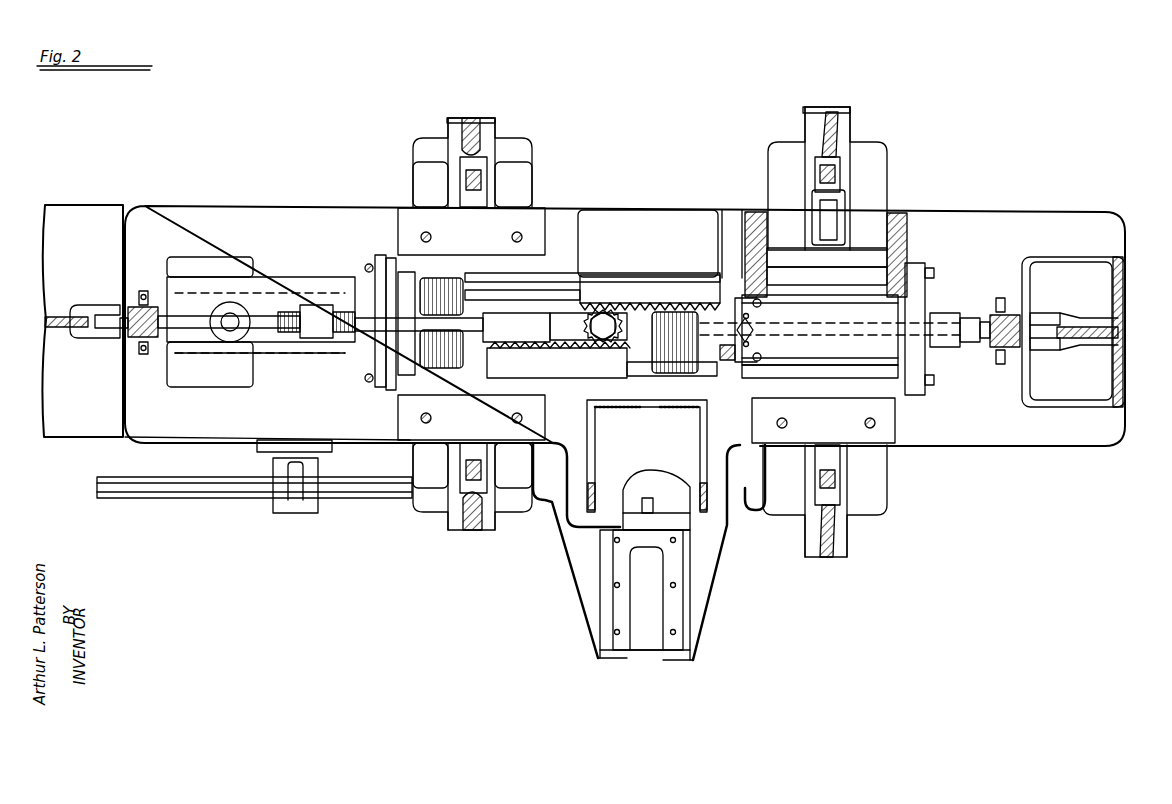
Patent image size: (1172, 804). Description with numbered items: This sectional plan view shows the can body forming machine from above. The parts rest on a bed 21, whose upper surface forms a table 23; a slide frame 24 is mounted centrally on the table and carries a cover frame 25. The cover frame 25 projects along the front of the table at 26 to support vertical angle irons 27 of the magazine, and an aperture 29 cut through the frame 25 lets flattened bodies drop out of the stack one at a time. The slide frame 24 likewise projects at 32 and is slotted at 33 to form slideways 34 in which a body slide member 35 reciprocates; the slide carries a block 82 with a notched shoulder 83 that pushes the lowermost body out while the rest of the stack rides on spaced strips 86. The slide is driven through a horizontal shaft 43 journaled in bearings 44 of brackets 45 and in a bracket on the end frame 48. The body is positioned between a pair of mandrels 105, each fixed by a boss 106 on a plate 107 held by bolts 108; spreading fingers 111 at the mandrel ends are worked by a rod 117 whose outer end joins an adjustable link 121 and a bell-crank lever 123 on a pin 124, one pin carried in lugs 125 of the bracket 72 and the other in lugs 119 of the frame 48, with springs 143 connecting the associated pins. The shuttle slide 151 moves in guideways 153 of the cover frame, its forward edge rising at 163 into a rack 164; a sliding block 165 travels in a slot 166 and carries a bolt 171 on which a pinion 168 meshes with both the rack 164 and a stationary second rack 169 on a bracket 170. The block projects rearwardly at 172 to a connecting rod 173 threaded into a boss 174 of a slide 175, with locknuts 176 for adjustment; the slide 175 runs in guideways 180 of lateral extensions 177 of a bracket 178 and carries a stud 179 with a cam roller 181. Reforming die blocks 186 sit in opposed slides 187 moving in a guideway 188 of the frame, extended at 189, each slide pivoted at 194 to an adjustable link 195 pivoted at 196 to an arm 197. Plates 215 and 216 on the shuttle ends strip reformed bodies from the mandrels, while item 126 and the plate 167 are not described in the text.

The bed 21 is at (1108, 448).
The table 23 is at (942, 433).
The slide frame 24 is at (743, 488).
The cover frame 25 is at (558, 215).
The frame projection 26 is at (713, 527).
The vertical angle irons 27 is at (586, 430).
The aperture 29 is at (691, 418).
The frame projection 32 is at (585, 603).
The slot 33 is at (647, 665).
The slideways 34 is at (620, 665).
The body slide member 35 is at (650, 620).
The horizontal shaft 43 is at (372, 498).
The bearings 44 is at (278, 510).
The brackets 45 is at (330, 447).
The frame 48 is at (52, 350).
The bracket 72 is at (1127, 306).
The block 82 is at (656, 524).
The notched shoulder 83 is at (647, 498).
The spaced strips 86 is at (673, 572).
The mandrels 105 is at (409, 378).
The boss 106 is at (369, 383).
The plate 107 is at (376, 362).
The bolts 108 is at (938, 382).
The spreading fingers 111 is at (742, 368).
The rod 117 is at (943, 347).
The spaced lugs 119 is at (80, 316).
The adjustable link 121 is at (150, 305).
The bell-crank lever 123 is at (1048, 340).
The pin 124 is at (101, 340).
The spaced lugs 125 is at (1073, 330).
The pin 126 is at (143, 291).
The springs 143 is at (143, 355).
The shuttle slide 151 is at (700, 312).
The guideways 153 is at (392, 388).
The upward extension 163 is at (602, 363).
The rack 164 is at (560, 352).
The sliding block 165 is at (638, 317).
The slot 166 is at (515, 300).
The plate 167 is at (478, 290).
The pinion 168 is at (616, 320).
The second rack 169 is at (650, 298).
The bracket 170 is at (658, 303).
The bolt 171 is at (598, 313).
The rearward projection 172 is at (516, 327).
The connecting rod 173 is at (378, 318).
The boss 174 is at (316, 305).
The slide 175 is at (215, 322).
The locknuts 176 is at (344, 312).
The lateral extensions 177 is at (272, 368).
The bracket 178 is at (210, 267).
The stud 179 is at (232, 331).
The guideways 180 is at (189, 357).
The cam roller 181 is at (232, 305).
The die blocks 186 is at (827, 276).
The slides 187 is at (510, 152).
The horizontal guideway 188 is at (449, 150).
The frame extension 189 is at (432, 145).
The pivot 194 is at (850, 232).
The adjustable link 195 is at (466, 182).
The pivot 196 is at (500, 128).
The arm 197 is at (478, 130).
The plate 215 is at (738, 330).
The plate 216 is at (427, 252).